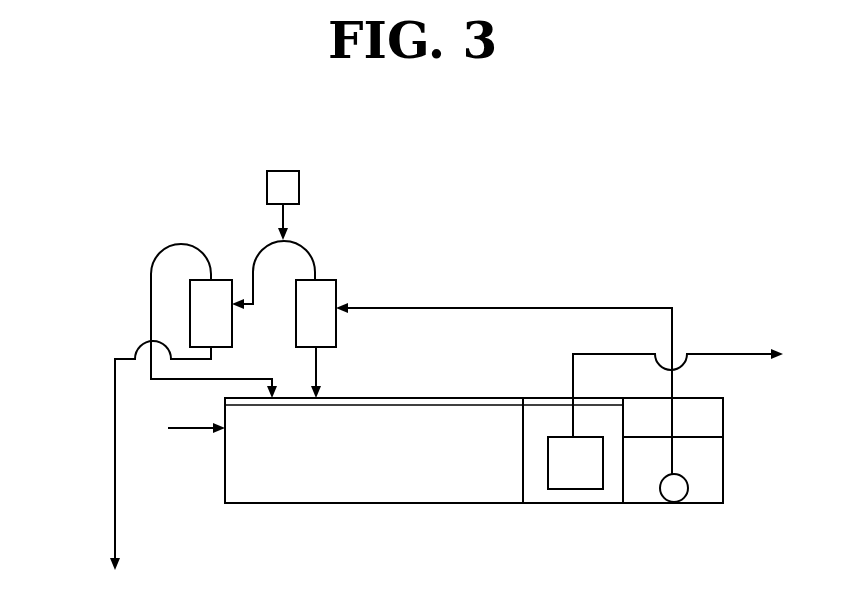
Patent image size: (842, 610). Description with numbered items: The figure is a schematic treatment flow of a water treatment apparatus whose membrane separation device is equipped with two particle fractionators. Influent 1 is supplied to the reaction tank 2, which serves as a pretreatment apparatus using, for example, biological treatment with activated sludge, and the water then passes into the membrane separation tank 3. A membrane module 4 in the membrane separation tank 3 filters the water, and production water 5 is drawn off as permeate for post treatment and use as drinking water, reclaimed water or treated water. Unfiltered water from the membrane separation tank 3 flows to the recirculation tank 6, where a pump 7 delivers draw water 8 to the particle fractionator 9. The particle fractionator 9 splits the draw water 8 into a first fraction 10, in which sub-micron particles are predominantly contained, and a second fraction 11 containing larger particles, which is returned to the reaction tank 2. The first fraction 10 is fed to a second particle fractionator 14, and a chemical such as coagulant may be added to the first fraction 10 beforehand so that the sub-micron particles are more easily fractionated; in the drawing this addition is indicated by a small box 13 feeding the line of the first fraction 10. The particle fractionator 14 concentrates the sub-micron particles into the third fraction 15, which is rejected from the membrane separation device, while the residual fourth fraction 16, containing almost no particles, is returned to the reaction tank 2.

The influent 1 is at (199, 432).
The reaction tank 2 is at (372, 503).
The membrane separation tank 3 is at (548, 503).
The membrane module 4 is at (558, 437).
The production water 5 is at (708, 354).
The recirculation tank 6 is at (650, 503).
The pump 7 is at (688, 488).
The draw water 8 is at (510, 307).
The particle fractionator 9 is at (325, 280).
The first fraction 10 is at (305, 250).
The second fraction 11 is at (330, 370).
The control unit 13 is at (292, 171).
The particle fractionator 14 is at (220, 280).
The third fraction 15 is at (112, 408).
The fourth fraction 16 is at (180, 241).